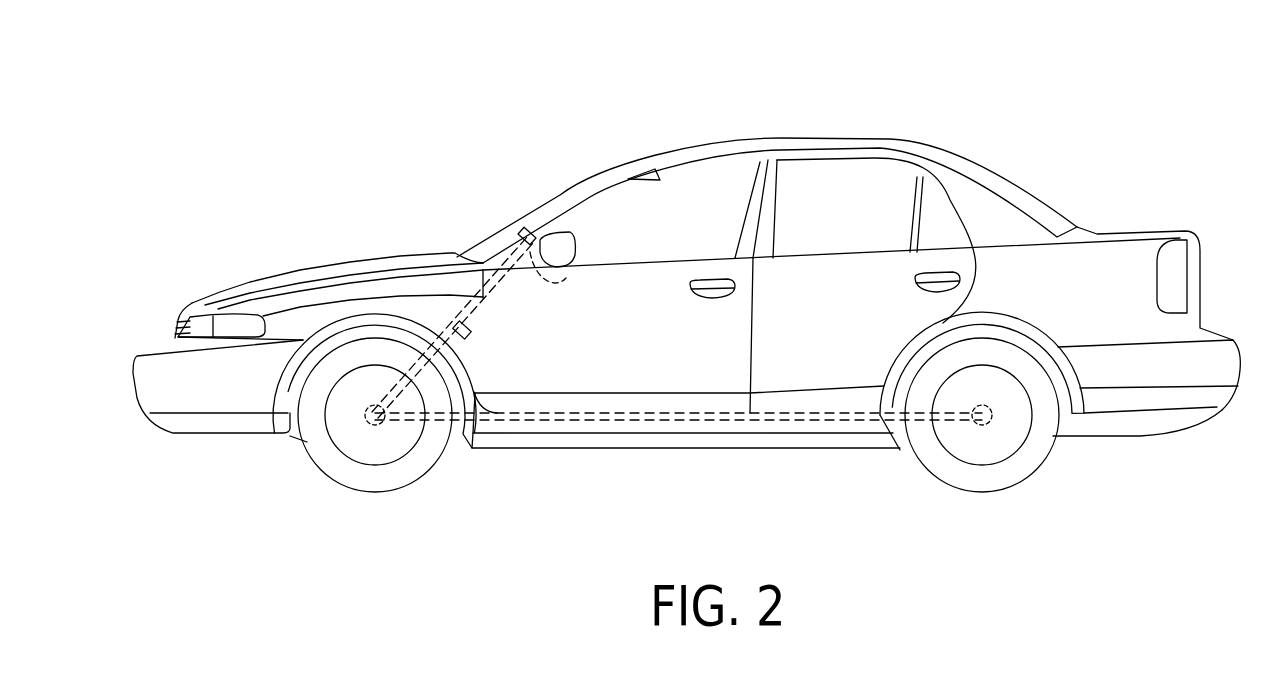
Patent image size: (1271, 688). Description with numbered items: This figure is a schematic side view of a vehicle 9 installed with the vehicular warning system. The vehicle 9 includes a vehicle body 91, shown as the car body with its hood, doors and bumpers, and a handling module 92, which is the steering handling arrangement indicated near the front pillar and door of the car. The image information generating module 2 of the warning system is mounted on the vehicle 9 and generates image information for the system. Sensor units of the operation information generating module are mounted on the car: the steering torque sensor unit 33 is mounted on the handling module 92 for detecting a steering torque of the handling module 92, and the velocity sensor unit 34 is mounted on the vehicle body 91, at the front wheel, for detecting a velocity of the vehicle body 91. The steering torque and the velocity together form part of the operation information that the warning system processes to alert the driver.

The image information generating module 2 is at (686, 302).
The vehicle 9 is at (297, 260).
The vehicle body 91 is at (229, 425).
The handling module 92 is at (520, 295).
The steering torque sensor unit 33 is at (479, 342).
The velocity sensor unit 34 is at (372, 427).